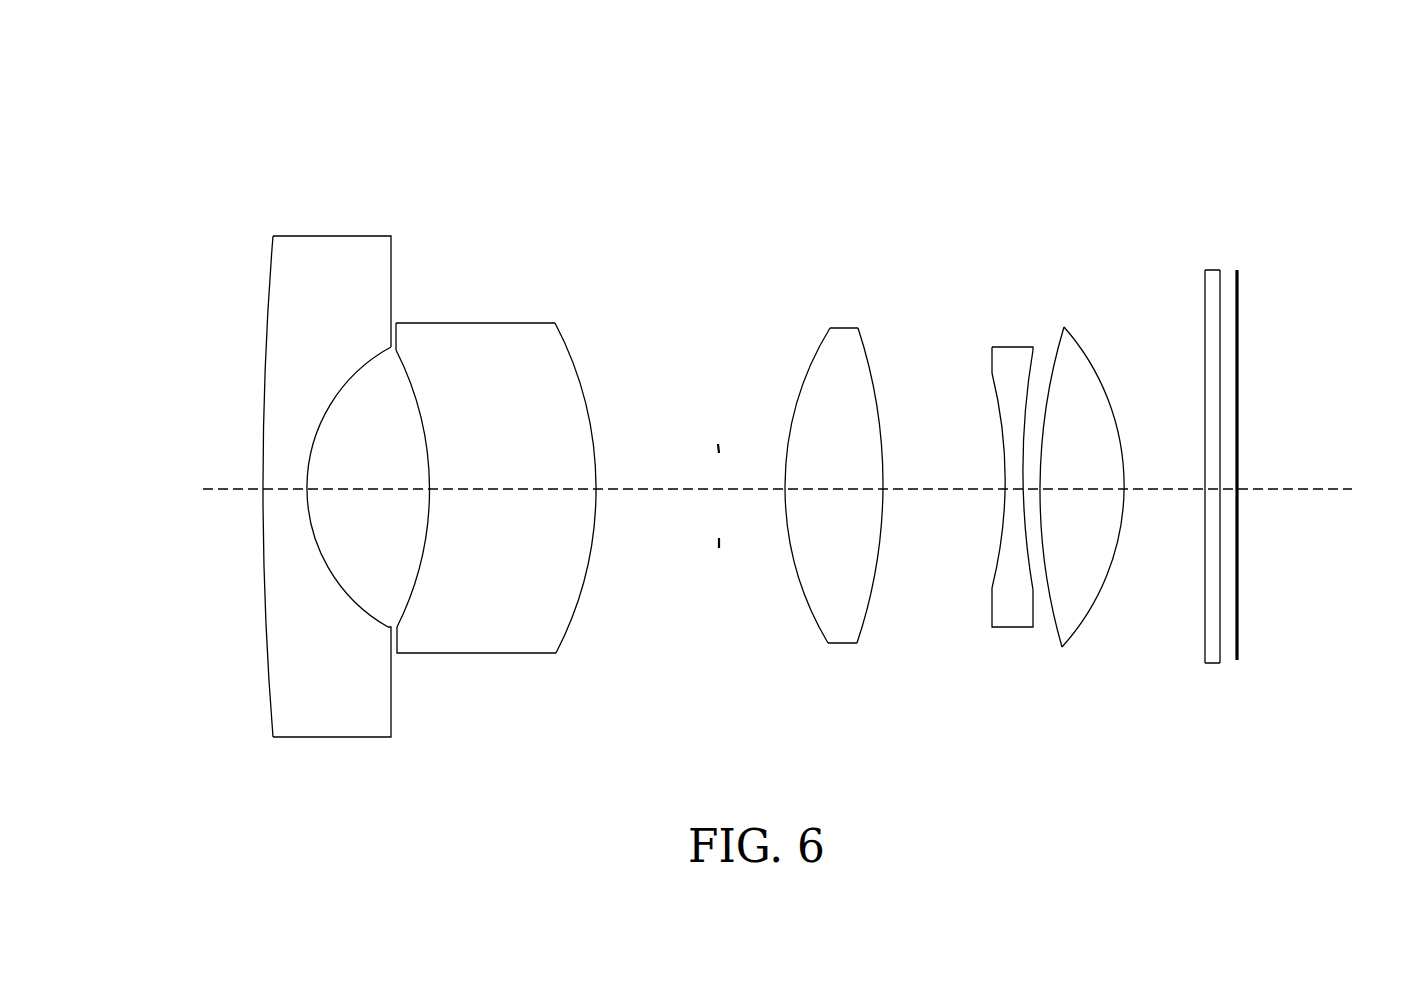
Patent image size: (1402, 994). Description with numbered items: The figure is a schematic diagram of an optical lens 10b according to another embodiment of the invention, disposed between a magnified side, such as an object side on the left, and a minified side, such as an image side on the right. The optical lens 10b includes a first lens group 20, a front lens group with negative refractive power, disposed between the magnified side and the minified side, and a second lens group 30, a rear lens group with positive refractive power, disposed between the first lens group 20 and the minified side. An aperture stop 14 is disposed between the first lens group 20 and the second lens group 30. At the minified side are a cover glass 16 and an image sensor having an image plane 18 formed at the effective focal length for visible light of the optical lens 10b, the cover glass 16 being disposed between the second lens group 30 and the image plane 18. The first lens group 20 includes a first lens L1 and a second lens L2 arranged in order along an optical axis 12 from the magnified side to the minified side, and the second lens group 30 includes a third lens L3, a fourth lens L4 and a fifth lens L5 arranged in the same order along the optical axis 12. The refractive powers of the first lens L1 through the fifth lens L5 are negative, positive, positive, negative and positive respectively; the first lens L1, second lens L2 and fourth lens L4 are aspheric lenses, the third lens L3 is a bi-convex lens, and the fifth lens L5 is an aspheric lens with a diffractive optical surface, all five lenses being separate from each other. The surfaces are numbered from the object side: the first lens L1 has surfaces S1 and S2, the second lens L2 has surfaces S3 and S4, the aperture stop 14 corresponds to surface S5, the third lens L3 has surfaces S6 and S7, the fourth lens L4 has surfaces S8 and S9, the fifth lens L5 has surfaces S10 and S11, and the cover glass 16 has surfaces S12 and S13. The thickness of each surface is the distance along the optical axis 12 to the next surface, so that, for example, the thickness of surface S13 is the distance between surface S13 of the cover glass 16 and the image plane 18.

The optical lens 10b is at (297, 56).
The optical axis 12 is at (1300, 488).
The aperture stop 14 is at (720, 443).
The cover glass 16 is at (1212, 268).
The image plane 18 is at (1237, 268).
The first lens group 20 is at (263, 140).
The second lens group 30 is at (1123, 145).
The first lens L1 is at (323, 243).
The second lens L2 is at (487, 322).
The third lens L3 is at (838, 333).
The fourth lens L4 is at (1009, 352).
The fifth lens L5 is at (1068, 345).
The surface S1 is at (270, 673).
The surface S2 is at (375, 622).
The surface S3 is at (413, 587).
The surface S4 is at (600, 570).
The surface S5 is at (719, 547).
The surface S6 is at (810, 612).
The surface S7 is at (870, 603).
The surface S8 is at (993, 587).
The surface S9 is at (1033, 590).
The surface S10 is at (1050, 612).
The surface S11 is at (1106, 587).
The surface S12 is at (1205, 545).
The surface S13 is at (1222, 593).